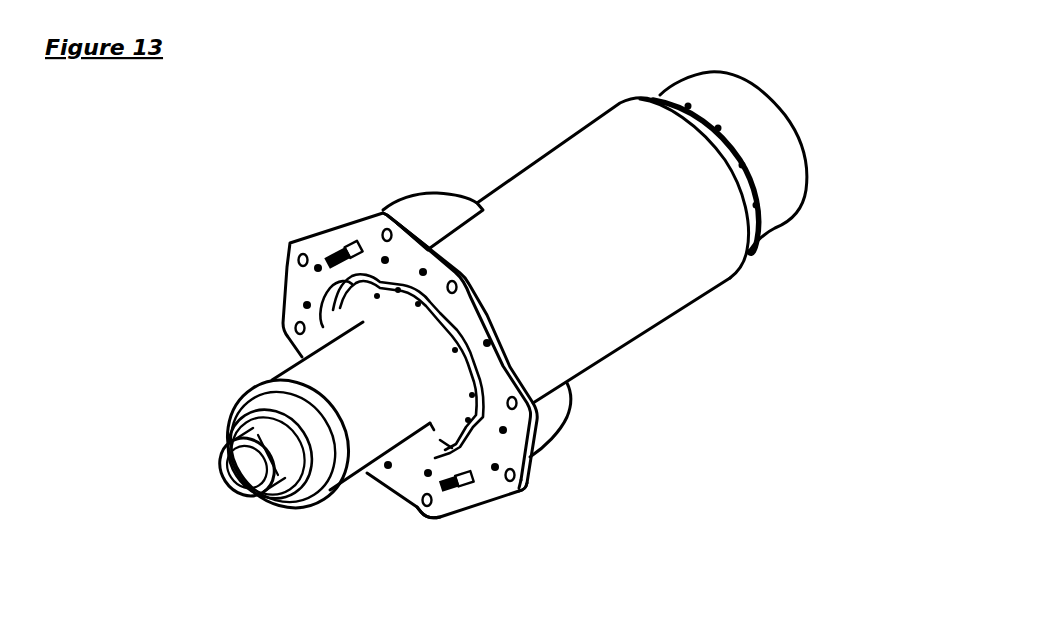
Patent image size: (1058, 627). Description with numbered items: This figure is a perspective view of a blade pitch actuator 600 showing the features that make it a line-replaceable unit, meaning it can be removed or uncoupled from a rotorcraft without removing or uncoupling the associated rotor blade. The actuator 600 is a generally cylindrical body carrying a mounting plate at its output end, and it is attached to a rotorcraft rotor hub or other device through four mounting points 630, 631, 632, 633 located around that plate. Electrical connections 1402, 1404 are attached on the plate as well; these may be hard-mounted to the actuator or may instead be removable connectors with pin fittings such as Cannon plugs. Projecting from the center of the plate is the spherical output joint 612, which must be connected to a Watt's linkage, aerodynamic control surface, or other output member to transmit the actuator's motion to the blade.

The actuator 600 is at (456, 163).
The spherical output joint 612 is at (233, 502).
The mounting point 630 is at (289, 249).
The mounting point 631 is at (383, 220).
The mounting point 632 is at (418, 512).
The mounting point 633 is at (523, 493).
The electrical connection 1402 is at (340, 247).
The electrical connection 1404 is at (460, 490).